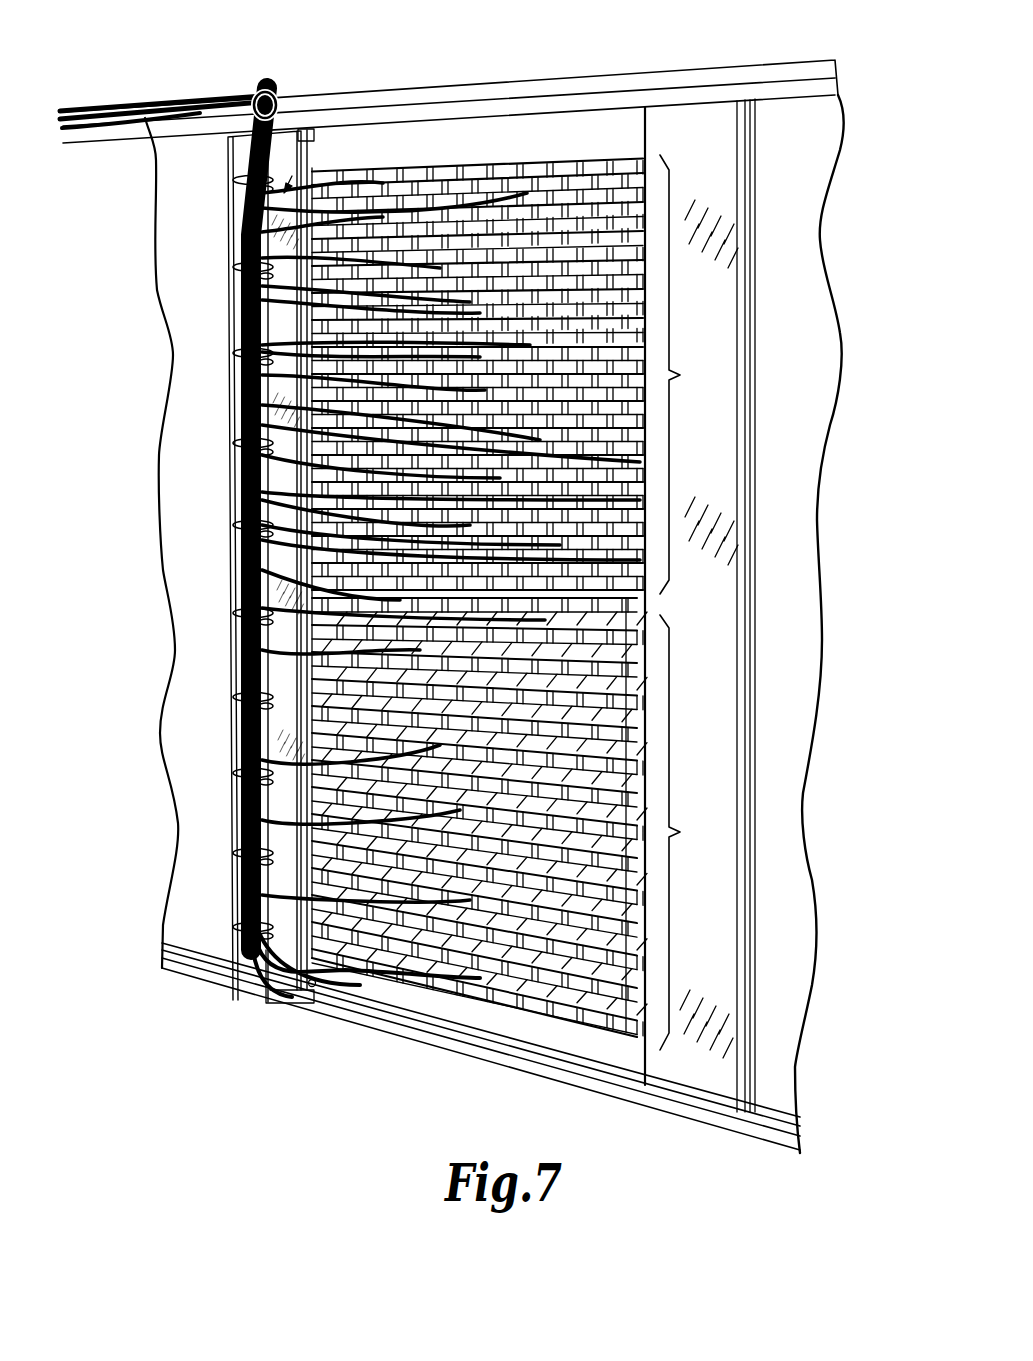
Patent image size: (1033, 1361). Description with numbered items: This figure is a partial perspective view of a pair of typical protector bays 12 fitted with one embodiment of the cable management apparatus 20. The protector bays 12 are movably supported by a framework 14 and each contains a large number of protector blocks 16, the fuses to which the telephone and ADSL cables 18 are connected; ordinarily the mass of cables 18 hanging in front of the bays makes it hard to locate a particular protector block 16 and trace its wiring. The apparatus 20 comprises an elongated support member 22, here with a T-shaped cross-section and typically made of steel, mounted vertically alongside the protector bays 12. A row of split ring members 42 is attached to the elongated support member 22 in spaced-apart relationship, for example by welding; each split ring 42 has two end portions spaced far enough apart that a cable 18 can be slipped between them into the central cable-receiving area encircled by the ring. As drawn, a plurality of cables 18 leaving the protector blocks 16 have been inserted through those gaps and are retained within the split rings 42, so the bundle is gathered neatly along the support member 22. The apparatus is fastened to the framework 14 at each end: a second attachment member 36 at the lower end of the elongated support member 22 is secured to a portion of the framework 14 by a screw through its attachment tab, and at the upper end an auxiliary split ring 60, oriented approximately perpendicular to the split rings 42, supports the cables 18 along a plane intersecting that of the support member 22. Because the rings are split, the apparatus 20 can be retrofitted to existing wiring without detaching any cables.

The protector bay 12 is at (689, 602).
The framework 14 is at (393, 114).
The protector block 16 is at (550, 187).
The cable 18 is at (173, 97).
The cable management apparatus 20 is at (310, 130).
The elongated support member 22 is at (268, 998).
The second attachment member 36 is at (310, 990).
The split ring member 42 is at (235, 267).
The auxiliary split ring 60 is at (270, 92).